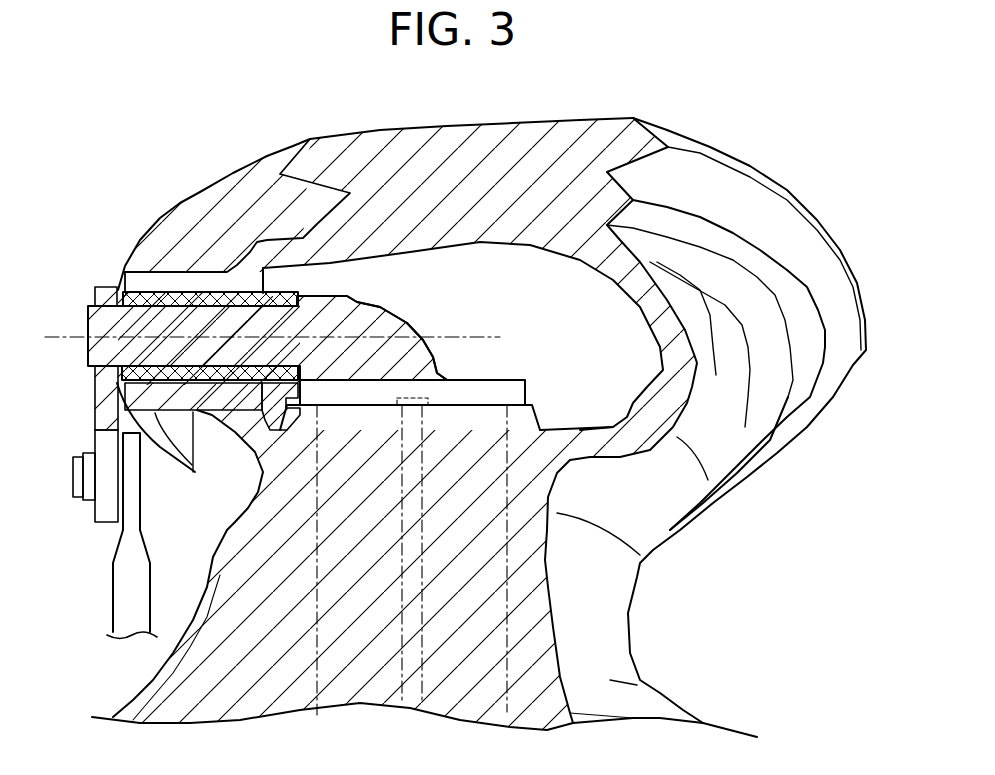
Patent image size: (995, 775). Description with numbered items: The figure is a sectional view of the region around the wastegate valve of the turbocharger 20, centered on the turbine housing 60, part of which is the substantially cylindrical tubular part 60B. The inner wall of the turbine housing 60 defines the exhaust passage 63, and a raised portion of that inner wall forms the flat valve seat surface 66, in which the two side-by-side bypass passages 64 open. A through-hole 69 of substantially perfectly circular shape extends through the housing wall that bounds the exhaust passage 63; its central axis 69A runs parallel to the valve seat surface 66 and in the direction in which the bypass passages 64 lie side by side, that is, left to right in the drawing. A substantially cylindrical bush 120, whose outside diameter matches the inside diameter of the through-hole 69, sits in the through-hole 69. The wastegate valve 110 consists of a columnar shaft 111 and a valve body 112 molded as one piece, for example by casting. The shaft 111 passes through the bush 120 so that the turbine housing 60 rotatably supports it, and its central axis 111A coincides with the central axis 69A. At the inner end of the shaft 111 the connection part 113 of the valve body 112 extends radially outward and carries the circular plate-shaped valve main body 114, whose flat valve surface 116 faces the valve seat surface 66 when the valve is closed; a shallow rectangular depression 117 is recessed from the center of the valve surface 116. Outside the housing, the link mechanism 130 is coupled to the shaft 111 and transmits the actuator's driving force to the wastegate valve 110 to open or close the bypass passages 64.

The turbocharger 20 is at (803, 143).
The turbine housing 60 is at (803, 178).
The tubular part 60B is at (632, 602).
The exhaust passage 63 is at (621, 339).
The bypass passage 64 is at (465, 570).
The valve seat surface 66 is at (347, 403).
The through-hole 69 is at (172, 290).
The central axis 69A is at (53, 337).
The wastegate valve 110 is at (337, 289).
The shaft 111 is at (192, 385).
The central axis 111A is at (305, 330).
The valve body 112 is at (398, 303).
The connection part 113 is at (420, 320).
The valve main body 114 is at (486, 380).
The valve surface 116 is at (487, 413).
The depression 117 is at (440, 397).
The bush 120 is at (143, 290).
The link mechanism 130 is at (112, 598).